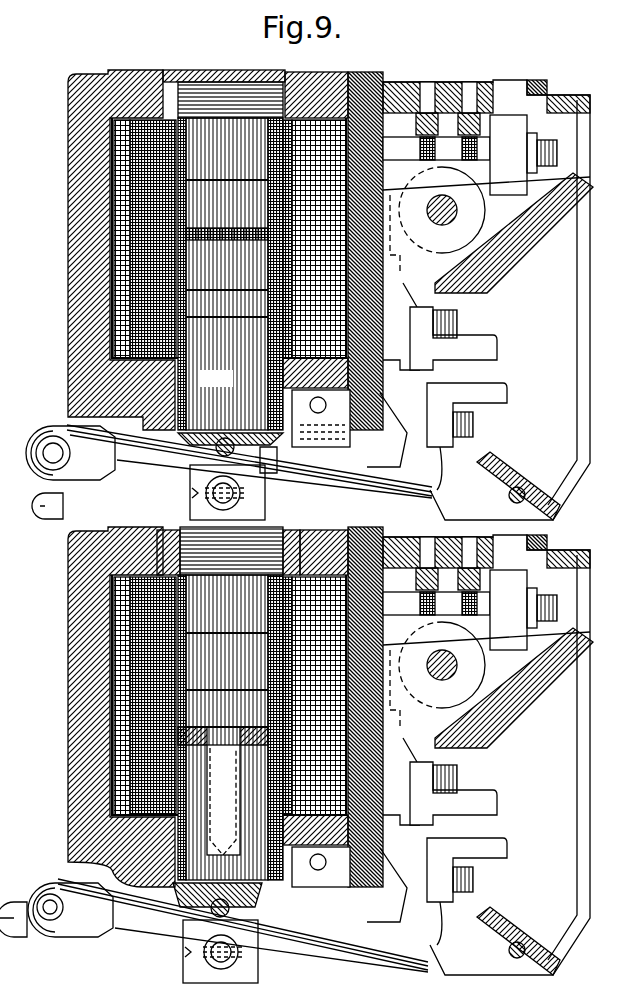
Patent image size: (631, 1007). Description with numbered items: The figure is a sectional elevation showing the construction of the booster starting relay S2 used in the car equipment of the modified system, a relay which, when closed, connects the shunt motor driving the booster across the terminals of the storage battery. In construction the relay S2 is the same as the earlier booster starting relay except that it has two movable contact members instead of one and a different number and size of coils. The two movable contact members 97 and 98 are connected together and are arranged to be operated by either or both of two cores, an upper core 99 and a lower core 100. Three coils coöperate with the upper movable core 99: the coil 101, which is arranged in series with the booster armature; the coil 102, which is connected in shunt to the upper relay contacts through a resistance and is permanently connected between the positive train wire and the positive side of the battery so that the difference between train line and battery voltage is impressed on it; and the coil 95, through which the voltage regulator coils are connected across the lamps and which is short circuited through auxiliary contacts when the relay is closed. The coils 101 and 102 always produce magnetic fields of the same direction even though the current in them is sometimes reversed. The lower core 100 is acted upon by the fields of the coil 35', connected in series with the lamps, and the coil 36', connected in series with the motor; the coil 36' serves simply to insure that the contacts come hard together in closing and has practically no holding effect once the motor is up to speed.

The coil 101 is at (118, 163).
The coil 102 is at (118, 222).
The coil 95 is at (118, 248).
The core 99 is at (230, 274).
The movable contact member 98 is at (437, 480).
The starting relay S2 is at (58, 570).
The coil 35' is at (73, 696).
The coil 36' is at (94, 696).
The core 100 is at (268, 890).
The movable contact member 97 is at (437, 945).